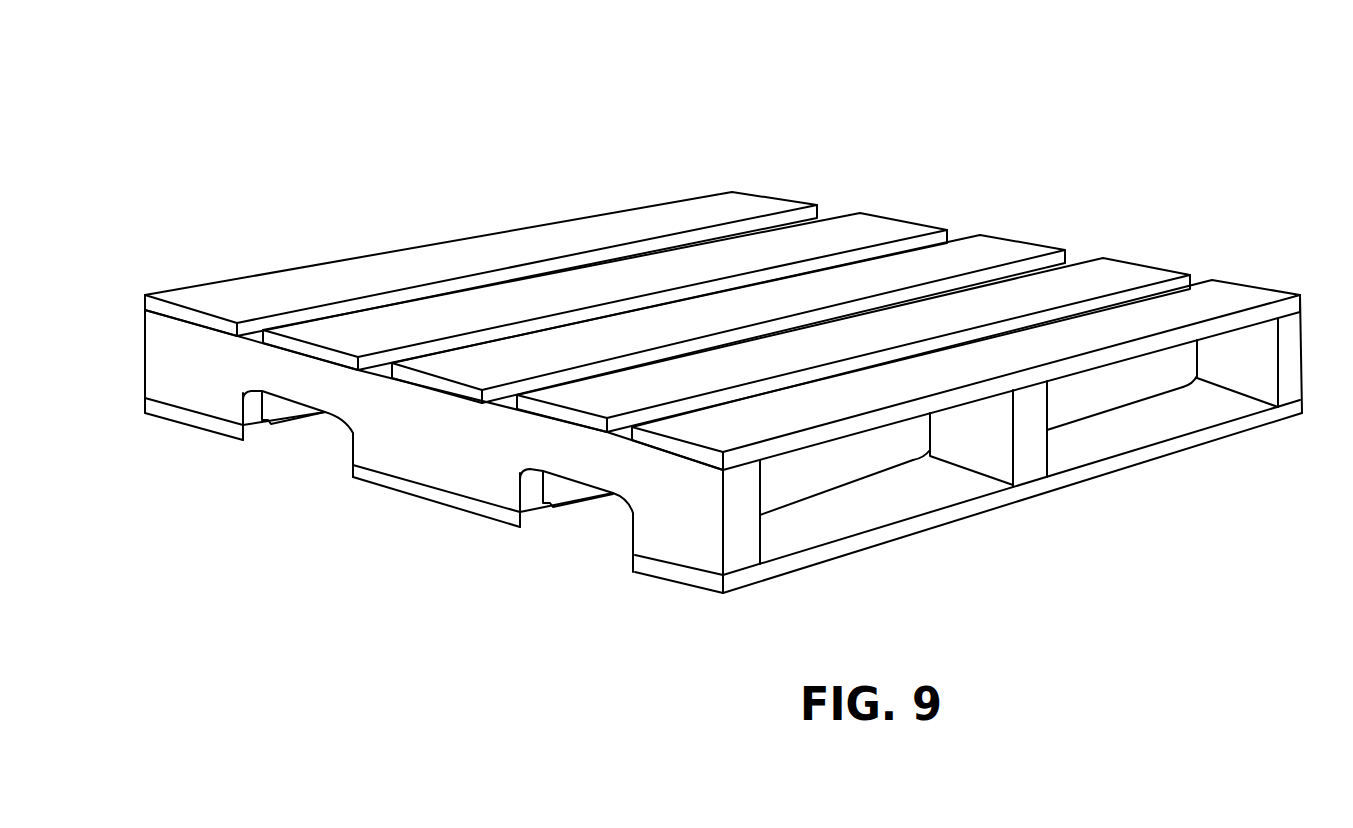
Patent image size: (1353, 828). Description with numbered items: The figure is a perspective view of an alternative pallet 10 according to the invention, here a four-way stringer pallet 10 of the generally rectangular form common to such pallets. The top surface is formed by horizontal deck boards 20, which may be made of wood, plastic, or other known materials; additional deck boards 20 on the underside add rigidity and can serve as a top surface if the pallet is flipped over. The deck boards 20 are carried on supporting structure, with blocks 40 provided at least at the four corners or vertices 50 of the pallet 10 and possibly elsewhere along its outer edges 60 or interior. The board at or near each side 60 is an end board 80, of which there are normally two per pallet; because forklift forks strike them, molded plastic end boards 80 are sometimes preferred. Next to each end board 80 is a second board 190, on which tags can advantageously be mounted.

The pallet 10 is at (270, 177).
The deck board 20 is at (990, 250).
The block 40 is at (213, 390).
The corner 50 is at (143, 367).
The outer edge 60 is at (460, 237).
The end board 80 is at (732, 210).
The second board 190 is at (880, 228).